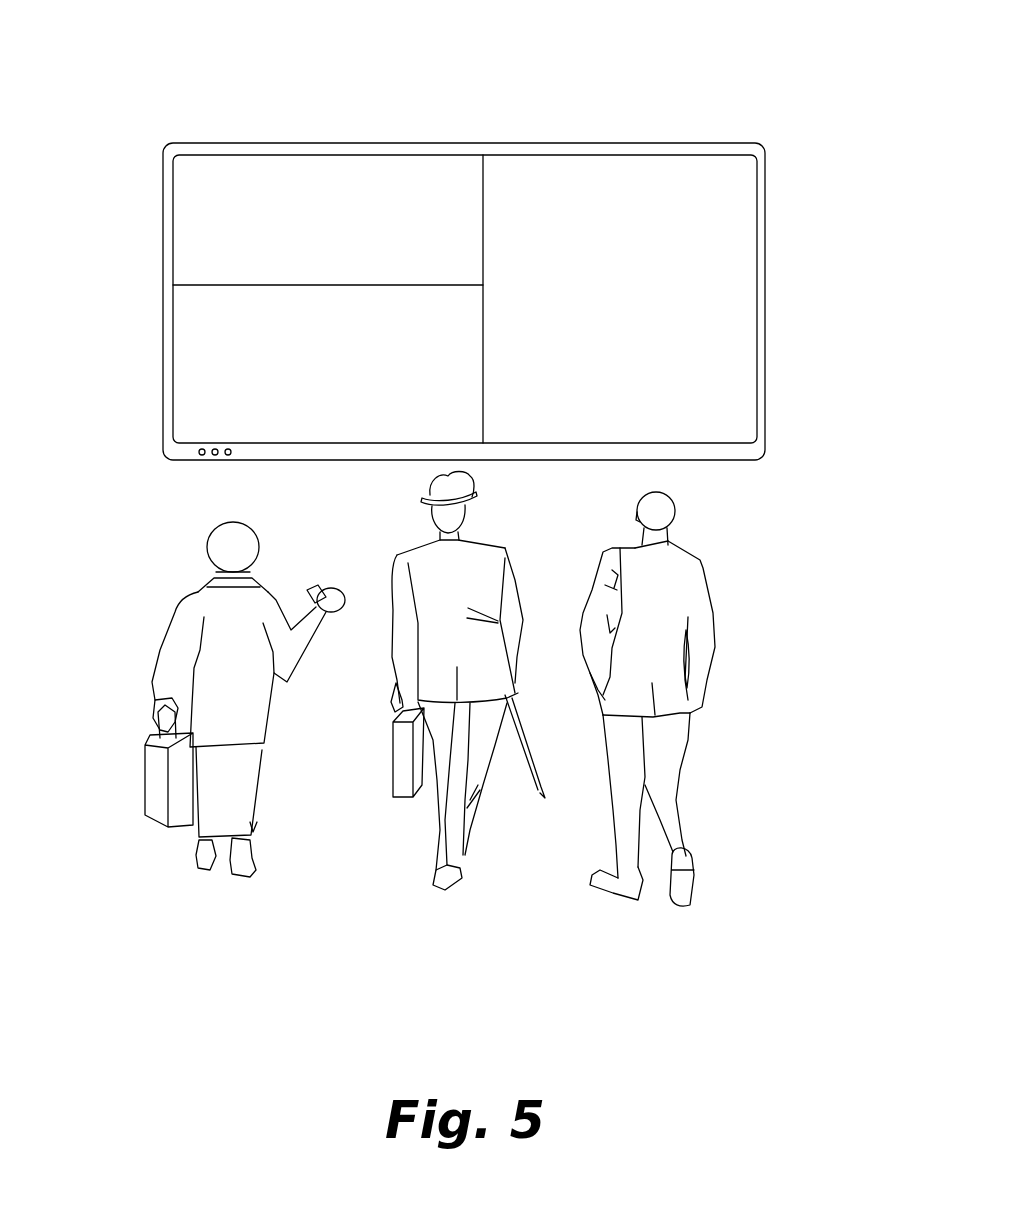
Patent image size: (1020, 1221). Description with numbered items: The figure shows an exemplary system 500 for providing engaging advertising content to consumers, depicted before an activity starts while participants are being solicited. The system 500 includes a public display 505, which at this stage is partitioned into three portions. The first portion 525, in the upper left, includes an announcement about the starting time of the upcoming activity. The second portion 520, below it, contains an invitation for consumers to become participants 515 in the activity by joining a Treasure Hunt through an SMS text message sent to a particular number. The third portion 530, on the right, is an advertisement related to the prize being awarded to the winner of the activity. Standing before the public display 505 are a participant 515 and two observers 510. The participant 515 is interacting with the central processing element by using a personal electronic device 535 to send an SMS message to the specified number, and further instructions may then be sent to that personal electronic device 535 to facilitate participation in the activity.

The system 500 is at (126, 100).
The public display 505 is at (190, 153).
The observers 510 is at (565, 814).
The participant 515 is at (174, 588).
The second portion 520 is at (185, 427).
The first portion 525 is at (267, 180).
The third portion 530 is at (670, 168).
The personal electronic device 535 is at (305, 568).